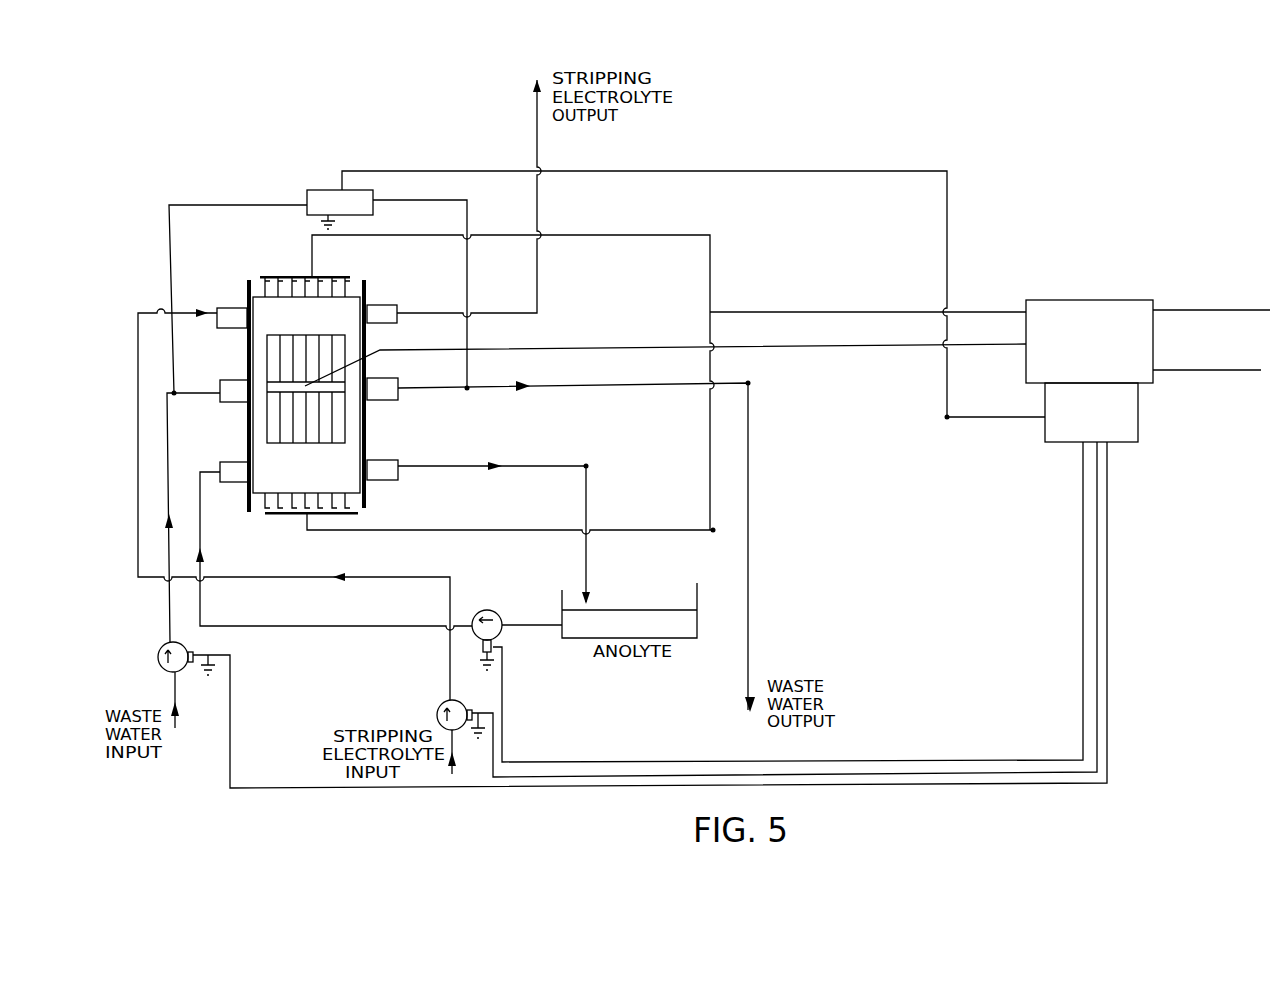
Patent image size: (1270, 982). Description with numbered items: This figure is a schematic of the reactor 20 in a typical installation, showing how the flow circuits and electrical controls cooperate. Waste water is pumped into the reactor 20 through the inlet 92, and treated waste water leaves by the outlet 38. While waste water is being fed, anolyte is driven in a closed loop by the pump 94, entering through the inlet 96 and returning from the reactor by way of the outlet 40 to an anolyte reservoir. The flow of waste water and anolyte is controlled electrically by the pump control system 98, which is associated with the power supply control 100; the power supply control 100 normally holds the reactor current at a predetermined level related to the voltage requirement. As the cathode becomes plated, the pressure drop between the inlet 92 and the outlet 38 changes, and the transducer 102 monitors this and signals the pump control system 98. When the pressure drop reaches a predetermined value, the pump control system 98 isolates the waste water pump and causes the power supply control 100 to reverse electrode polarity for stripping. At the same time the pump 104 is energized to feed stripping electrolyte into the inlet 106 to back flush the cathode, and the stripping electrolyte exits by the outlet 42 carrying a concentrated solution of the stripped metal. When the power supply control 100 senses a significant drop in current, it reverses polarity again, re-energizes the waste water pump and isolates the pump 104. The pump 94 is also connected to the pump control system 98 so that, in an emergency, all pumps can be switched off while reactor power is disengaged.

The reactor 20 is at (368, 297).
The outlet 38 is at (383, 400).
The outlet 40 is at (388, 480).
The outlet 42 is at (383, 323).
The inlet 92 is at (232, 380).
The pump 94 is at (162, 648).
The inlet 96 is at (238, 465).
The pump control system 98 is at (1140, 412).
The power supply control 100 is at (1122, 290).
The transducer 102 is at (320, 190).
The pump 104 is at (442, 700).
The inlet 106 is at (230, 307).